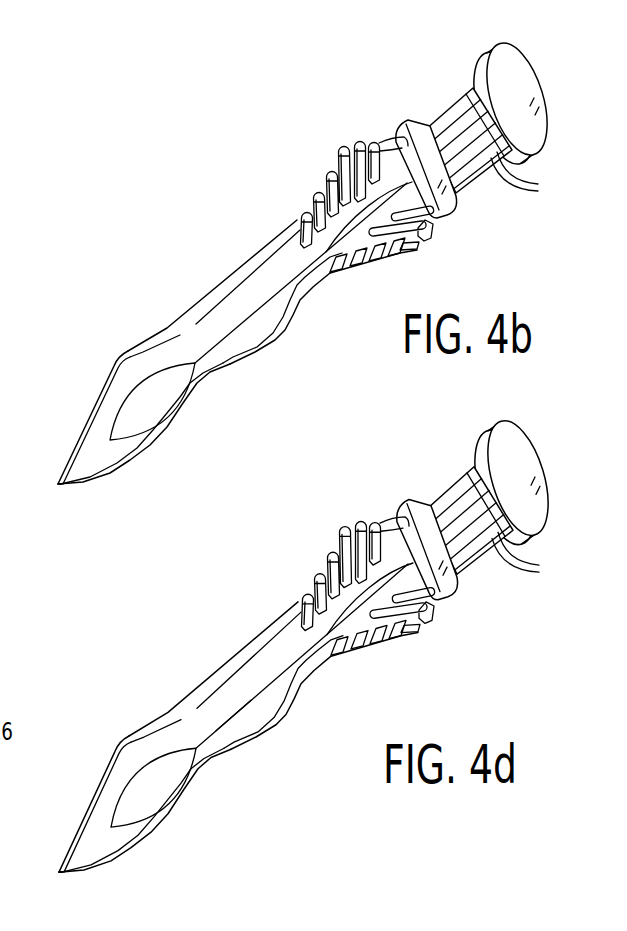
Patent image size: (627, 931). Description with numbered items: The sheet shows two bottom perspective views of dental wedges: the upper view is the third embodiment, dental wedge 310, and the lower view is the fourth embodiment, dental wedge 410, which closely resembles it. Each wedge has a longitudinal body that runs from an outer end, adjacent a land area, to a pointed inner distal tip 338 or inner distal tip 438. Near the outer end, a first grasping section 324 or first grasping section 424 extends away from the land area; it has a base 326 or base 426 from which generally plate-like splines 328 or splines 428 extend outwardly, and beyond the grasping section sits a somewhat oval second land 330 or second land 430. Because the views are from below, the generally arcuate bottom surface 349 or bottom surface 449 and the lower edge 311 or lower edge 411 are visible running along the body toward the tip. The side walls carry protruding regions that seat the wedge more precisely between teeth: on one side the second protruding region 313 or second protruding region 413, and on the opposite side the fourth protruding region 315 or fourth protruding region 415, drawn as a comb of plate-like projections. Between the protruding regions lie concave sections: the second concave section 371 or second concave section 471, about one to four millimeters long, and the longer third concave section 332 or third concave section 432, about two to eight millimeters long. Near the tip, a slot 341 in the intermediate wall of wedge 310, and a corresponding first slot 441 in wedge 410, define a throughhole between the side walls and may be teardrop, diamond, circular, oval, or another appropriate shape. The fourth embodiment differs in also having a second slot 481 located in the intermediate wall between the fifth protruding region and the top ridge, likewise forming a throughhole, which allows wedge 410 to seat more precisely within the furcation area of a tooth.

In FIG. 4B, the dental wedge 310 is at (299, 272).
In FIG. 4B, the lower edge 311 is at (102, 390).
In FIG. 4B, the second protruding region 313 is at (420, 250).
In FIG. 4B, the fourth protruding region 315 is at (352, 135).
In FIG. 4B, the first grasping section 324 is at (425, 108).
In FIG. 4B, the base 326 is at (456, 124).
In FIG. 4B, the splines 328 is at (538, 188).
In FIG. 4B, the second land 330 is at (519, 82).
In FIG. 4B, the third concave section 332 is at (234, 271).
In FIG. 4B, the inner distal tip 338 is at (56, 482).
In FIG. 4B, the slot 341 is at (157, 393).
In FIG. 4B, the bottom surface 349 is at (258, 296).
In FIG. 4B, the second concave section 371 is at (263, 345).
In FIG. 4D, the dental wedge 410 is at (289, 640).
In FIG. 4D, the lower edge 411 is at (100, 772).
In FIG. 4D, the second protruding region 413 is at (421, 633).
In FIG. 4D, the fourth protruding region 415 is at (352, 513).
In FIG. 4D, the first grasping section 424 is at (480, 582).
In FIG. 4D, the base 426 is at (463, 538).
In FIG. 4D, the splines 428 is at (538, 567).
In FIG. 4D, the second land 430 is at (520, 462).
In FIG. 4D, the third concave section 432 is at (234, 650).
In FIG. 4D, the inner distal tip 438 is at (56, 862).
In FIG. 4D, the first slot 441 is at (160, 773).
In FIG. 4D, the bottom surface 449 is at (258, 679).
In FIG. 4D, the second concave section 471 is at (264, 730).
In FIG. 4D, the second slot 481 is at (233, 718).